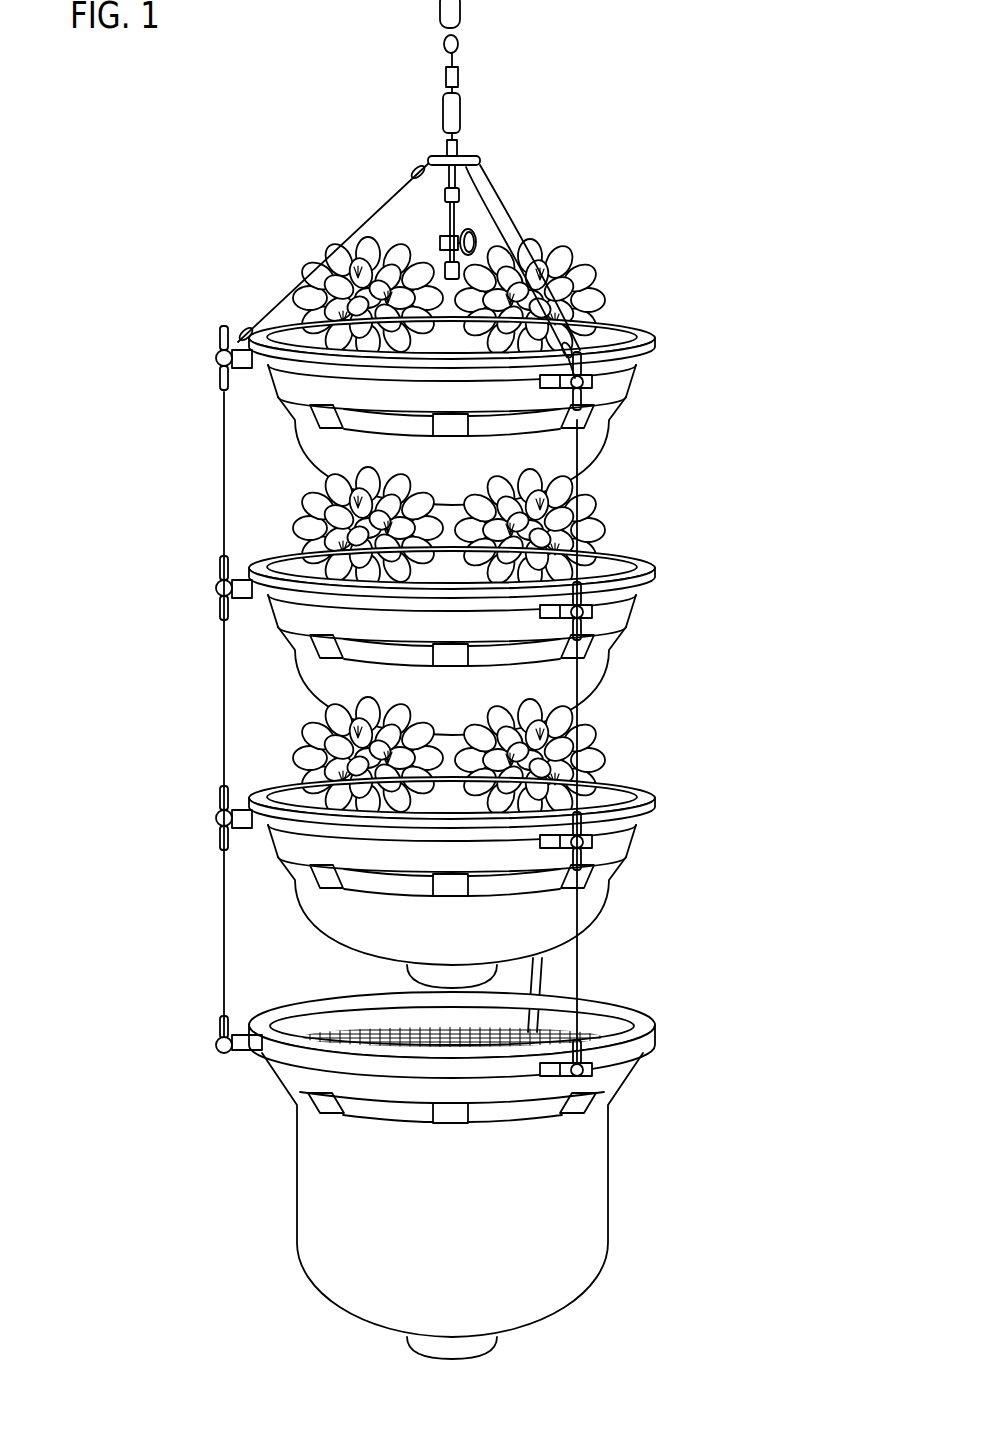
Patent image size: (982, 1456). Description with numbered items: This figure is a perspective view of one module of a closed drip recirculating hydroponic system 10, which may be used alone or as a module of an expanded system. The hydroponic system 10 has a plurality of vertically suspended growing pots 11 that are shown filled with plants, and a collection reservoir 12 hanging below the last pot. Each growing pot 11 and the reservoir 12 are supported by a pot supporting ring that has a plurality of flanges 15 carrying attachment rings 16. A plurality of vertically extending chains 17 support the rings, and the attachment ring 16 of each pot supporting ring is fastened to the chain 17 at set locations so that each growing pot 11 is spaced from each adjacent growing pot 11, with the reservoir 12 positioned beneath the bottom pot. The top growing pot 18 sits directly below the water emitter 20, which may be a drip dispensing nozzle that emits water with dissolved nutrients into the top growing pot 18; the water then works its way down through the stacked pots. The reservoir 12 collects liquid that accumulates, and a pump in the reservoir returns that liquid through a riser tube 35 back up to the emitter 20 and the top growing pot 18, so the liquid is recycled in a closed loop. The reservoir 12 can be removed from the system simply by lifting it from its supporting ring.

The hydroponic system 10 is at (476, 679).
The growing pot 11 is at (620, 674).
The collection reservoir 12 is at (623, 1183).
The flange 15 is at (243, 1053).
The attachment ring 16 is at (216, 1042).
The chain 17 is at (222, 700).
The top growing pot 18 is at (667, 326).
The water emitter 20 is at (440, 240).
The riser tube 35 is at (542, 978).